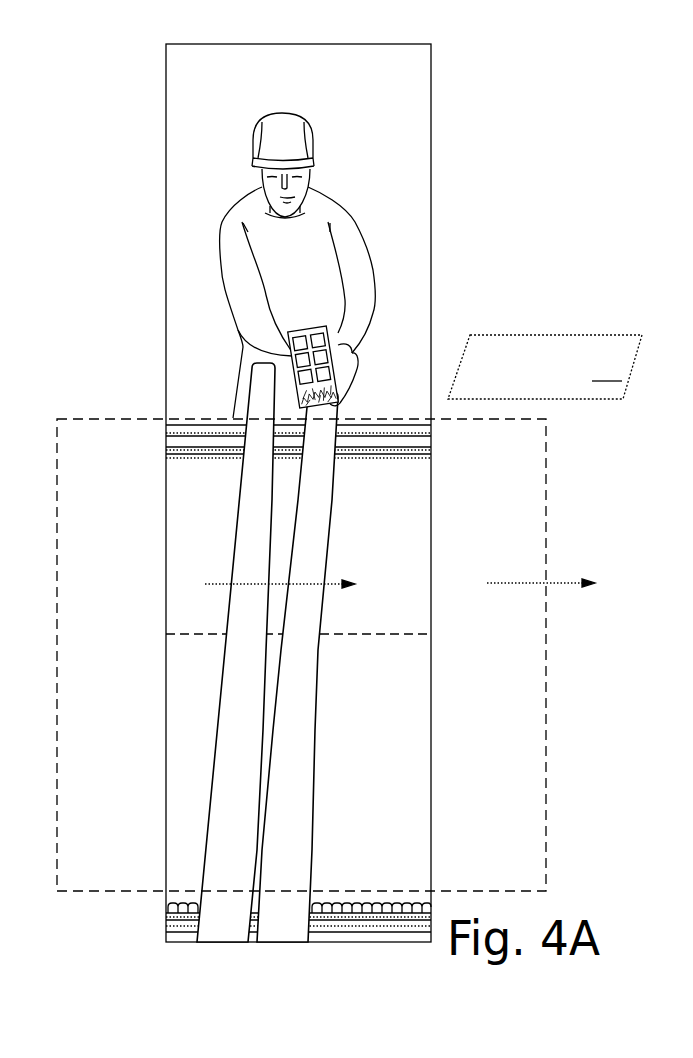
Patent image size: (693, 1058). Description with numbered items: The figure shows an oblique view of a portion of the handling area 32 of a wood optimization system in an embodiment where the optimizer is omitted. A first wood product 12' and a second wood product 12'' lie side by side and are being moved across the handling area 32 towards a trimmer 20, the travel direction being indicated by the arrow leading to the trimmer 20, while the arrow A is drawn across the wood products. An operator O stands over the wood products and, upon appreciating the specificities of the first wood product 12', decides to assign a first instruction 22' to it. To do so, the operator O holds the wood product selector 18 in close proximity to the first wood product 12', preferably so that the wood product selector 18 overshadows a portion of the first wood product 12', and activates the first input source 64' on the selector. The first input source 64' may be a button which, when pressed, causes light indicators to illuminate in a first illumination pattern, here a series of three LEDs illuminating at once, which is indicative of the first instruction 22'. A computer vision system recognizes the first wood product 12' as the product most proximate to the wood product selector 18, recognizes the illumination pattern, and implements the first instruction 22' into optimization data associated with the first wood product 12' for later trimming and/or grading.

The operator O is at (327, 200).
The first input source 64' is at (294, 313).
The wood product selector 18 is at (347, 360).
The first instruction 22' is at (491, 367).
The handling area 32 is at (77, 406).
The movement direction A is at (305, 582).
The trimmer 20 is at (633, 596).
The second wood product 12'' is at (186, 652).
The first wood product 12' is at (319, 667).